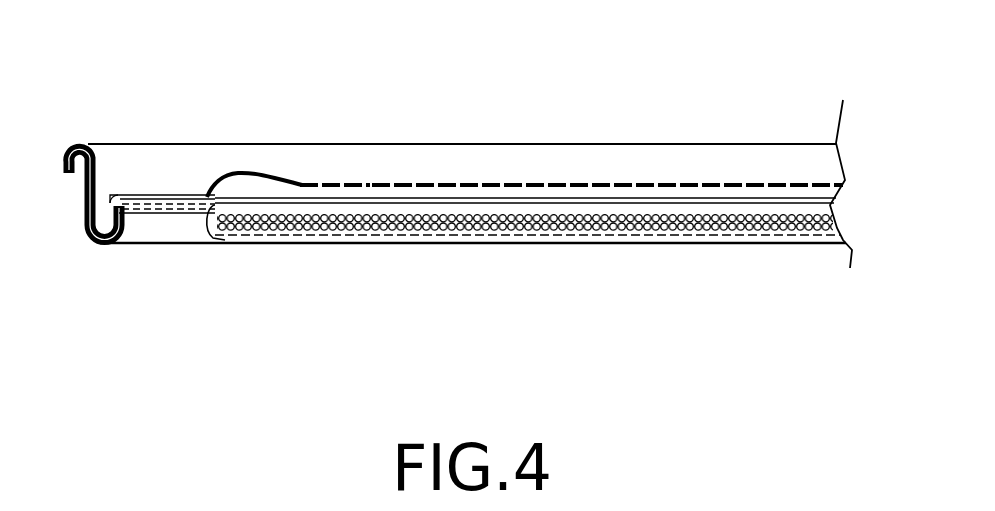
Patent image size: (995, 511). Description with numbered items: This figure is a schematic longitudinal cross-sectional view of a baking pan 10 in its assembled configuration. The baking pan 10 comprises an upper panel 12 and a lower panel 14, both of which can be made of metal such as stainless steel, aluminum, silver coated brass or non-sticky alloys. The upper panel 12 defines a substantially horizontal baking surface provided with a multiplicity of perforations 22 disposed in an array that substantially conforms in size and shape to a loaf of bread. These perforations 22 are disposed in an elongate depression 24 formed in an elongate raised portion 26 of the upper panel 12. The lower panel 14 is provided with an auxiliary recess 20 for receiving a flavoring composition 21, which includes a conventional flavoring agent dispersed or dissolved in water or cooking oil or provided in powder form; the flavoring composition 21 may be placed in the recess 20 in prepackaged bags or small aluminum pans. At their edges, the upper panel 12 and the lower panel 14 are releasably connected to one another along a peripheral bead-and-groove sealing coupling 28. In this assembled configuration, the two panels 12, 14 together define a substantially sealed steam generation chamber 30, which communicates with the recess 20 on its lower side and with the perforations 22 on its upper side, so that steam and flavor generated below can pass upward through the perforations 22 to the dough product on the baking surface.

The baking pan 10 is at (120, 298).
The upper panel 12 is at (491, 124).
The lower panel 14 is at (190, 272).
The auxiliary recess 20 is at (415, 231).
The flavoring composition 21 is at (508, 222).
The perforations 22 is at (437, 183).
The elongate depression 24 is at (337, 183).
The elongate raised portion 26 is at (236, 150).
The peripheral bead-and-groove sealing coupling 28 is at (86, 149).
The steam generation chamber 30 is at (585, 205).